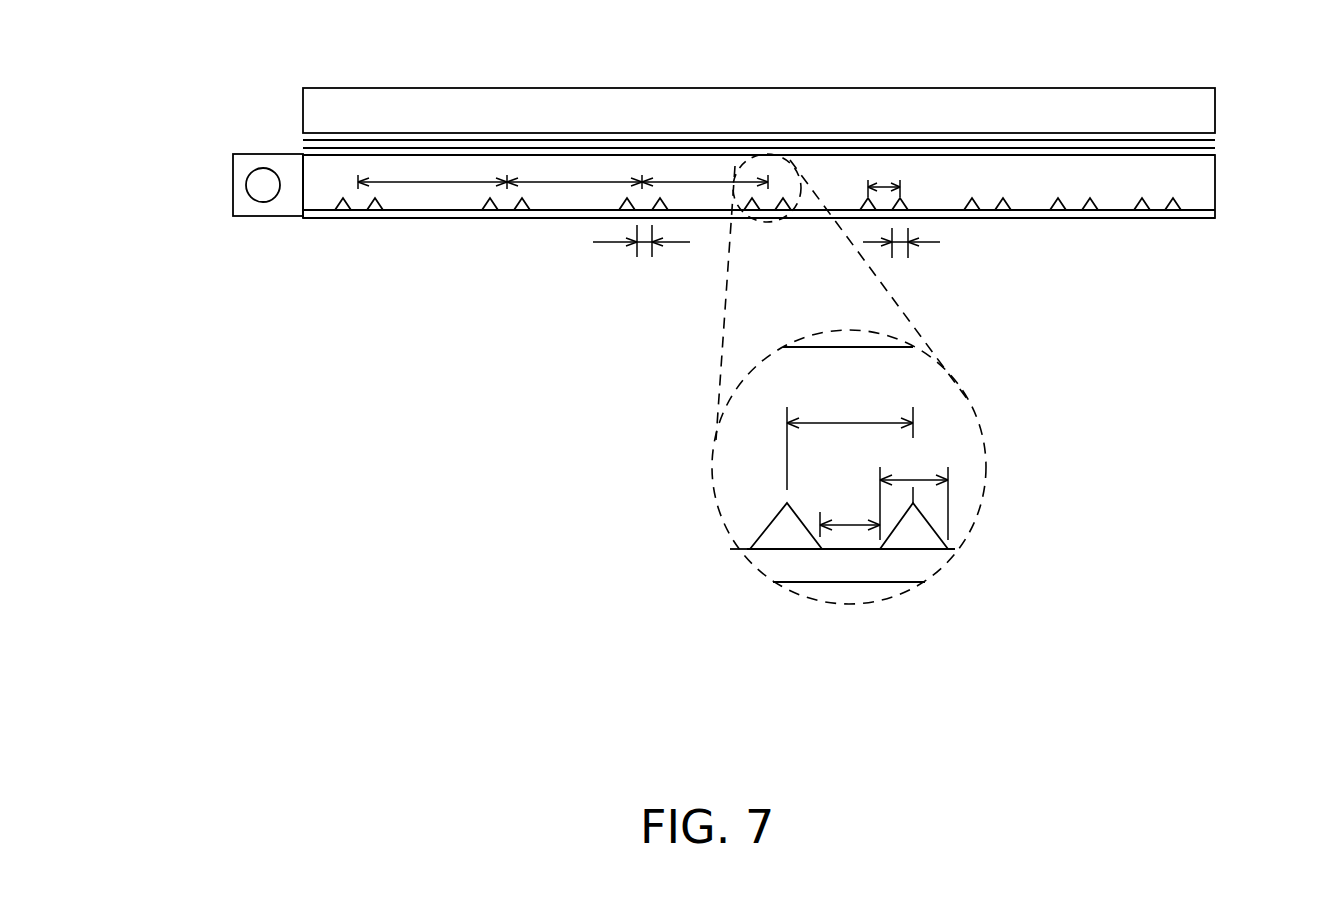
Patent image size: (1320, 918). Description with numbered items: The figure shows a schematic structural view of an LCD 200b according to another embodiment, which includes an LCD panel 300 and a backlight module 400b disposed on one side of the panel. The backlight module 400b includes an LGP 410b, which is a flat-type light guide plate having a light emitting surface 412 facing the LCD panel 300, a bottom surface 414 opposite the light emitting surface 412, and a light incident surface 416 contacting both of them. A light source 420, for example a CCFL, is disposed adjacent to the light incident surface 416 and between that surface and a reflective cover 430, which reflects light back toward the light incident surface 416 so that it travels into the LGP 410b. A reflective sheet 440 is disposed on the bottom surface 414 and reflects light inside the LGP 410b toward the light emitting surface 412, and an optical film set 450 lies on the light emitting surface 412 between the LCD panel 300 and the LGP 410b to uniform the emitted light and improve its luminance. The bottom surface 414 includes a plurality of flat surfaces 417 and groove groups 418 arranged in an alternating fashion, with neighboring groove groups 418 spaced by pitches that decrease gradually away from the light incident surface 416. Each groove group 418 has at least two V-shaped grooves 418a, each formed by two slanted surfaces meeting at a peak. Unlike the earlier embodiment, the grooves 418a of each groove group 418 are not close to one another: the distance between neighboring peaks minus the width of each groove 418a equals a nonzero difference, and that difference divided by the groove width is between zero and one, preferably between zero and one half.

The LCD 200b is at (1272, 488).
The LCD panel 300 is at (1193, 113).
The backlight module 400b is at (137, 73).
The LGP 410b is at (297, 153).
The light emitting surface 412 is at (968, 153).
The bottom surface 414 is at (1167, 382).
The light incident surface 416 is at (305, 172).
The flat surface 417 is at (1123, 212).
The groove group 418 is at (1123, 327).
The groove 418a is at (1060, 212).
The light source 420 is at (268, 175).
The reflective cover 430 is at (233, 188).
The reflective sheet 440 is at (331, 211).
The optical film set 450 is at (295, 134).